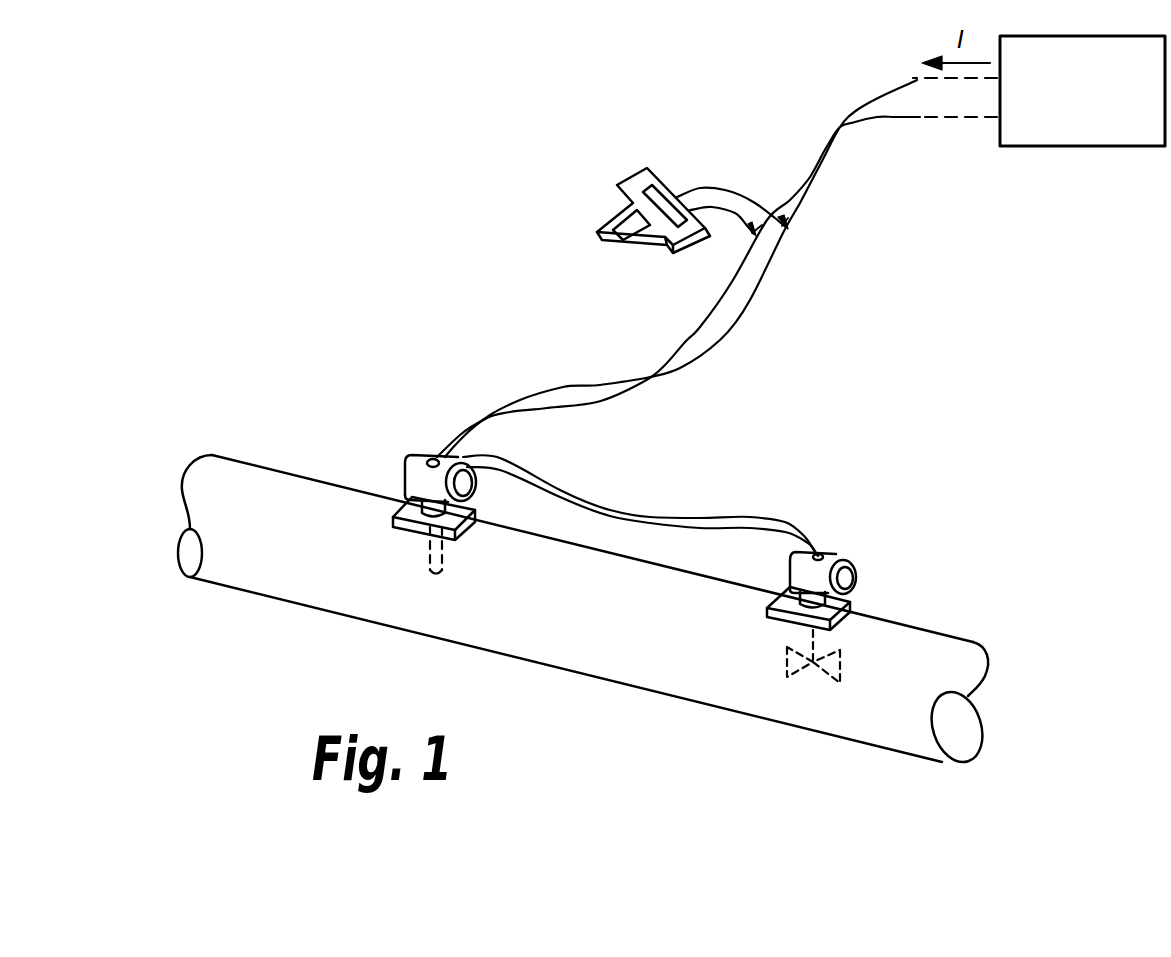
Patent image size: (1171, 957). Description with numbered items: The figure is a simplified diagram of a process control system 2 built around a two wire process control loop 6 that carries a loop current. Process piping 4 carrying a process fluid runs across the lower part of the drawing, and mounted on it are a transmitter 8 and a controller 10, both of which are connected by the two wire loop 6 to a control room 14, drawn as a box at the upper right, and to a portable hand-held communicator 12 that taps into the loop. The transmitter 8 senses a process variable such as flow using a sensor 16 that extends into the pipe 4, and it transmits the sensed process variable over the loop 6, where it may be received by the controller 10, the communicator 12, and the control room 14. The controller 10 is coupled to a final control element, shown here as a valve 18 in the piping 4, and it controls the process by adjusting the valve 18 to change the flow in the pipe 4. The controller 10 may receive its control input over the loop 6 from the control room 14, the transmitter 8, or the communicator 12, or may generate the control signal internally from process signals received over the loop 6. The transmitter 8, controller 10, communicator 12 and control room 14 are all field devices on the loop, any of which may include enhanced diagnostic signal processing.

The process control system 2 is at (268, 264).
The process piping 4 is at (261, 566).
The two wire process control loop 6 is at (730, 288).
The transmitter 8 is at (486, 493).
The controller 10 is at (842, 553).
The communicator 12 is at (628, 181).
The control room 14 is at (1030, 147).
The sensor 16 is at (447, 567).
The valve 18 is at (842, 665).